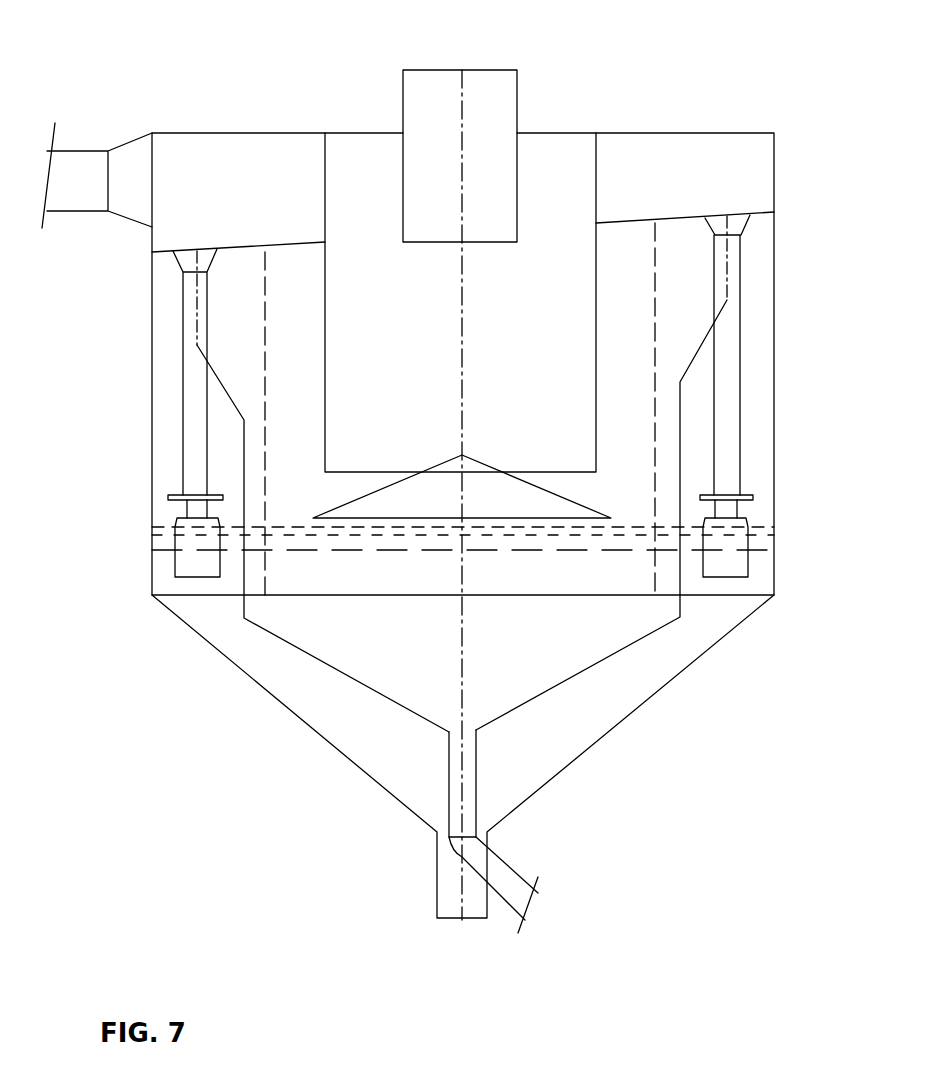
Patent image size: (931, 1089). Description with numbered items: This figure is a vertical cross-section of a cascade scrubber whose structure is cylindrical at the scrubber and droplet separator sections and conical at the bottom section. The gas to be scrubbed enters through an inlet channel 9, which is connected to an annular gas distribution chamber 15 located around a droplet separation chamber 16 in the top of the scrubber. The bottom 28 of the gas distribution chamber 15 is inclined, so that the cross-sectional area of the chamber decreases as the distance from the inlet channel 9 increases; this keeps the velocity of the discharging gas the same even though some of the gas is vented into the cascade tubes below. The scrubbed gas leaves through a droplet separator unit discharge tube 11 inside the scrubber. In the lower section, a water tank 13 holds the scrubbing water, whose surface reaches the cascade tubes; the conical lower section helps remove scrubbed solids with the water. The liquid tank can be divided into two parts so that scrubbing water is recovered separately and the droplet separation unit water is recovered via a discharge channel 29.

The inlet channel 9 is at (73, 157).
The droplet separator unit discharge tube 11 is at (510, 98).
The water tank 13 is at (670, 657).
The gas distribution chamber 15 is at (680, 143).
The droplet separation chamber 16 is at (575, 148).
The bottom of the gas distribution chamber 28 is at (690, 215).
The discharge channel 29 is at (502, 868).